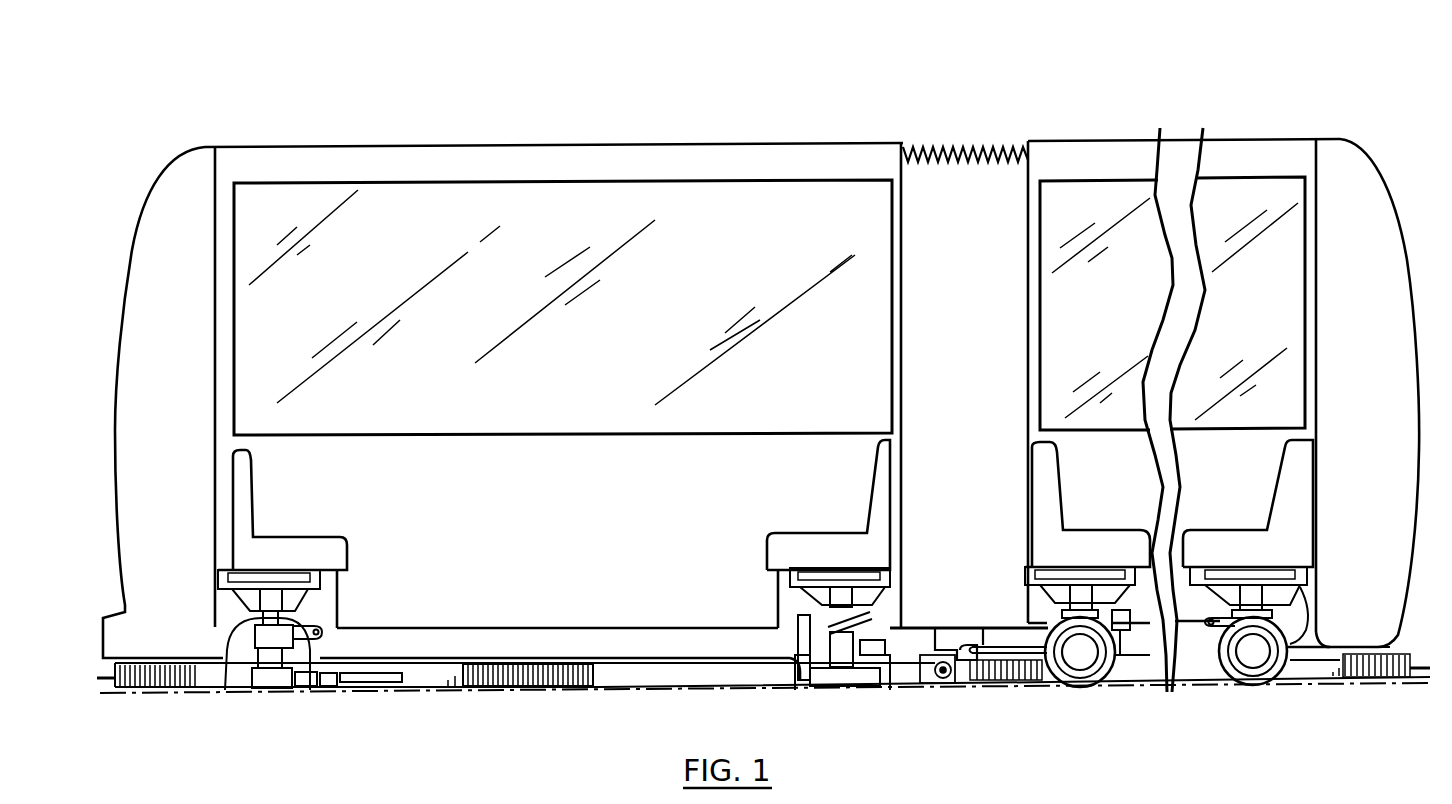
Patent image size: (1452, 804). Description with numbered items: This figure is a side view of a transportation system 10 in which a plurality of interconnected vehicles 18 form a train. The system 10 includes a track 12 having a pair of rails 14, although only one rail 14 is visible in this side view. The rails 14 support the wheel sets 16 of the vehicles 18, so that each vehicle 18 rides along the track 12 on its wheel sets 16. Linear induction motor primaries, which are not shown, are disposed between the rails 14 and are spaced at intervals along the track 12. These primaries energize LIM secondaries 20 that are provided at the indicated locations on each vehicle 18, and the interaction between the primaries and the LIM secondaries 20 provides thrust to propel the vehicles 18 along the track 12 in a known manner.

The transportation system 10 is at (1102, 96).
The track 12 is at (430, 696).
The rails 14 is at (624, 693).
The wheel sets 16 is at (236, 668).
The vehicles 18 is at (422, 128).
The LIM secondaries 20 is at (539, 672).